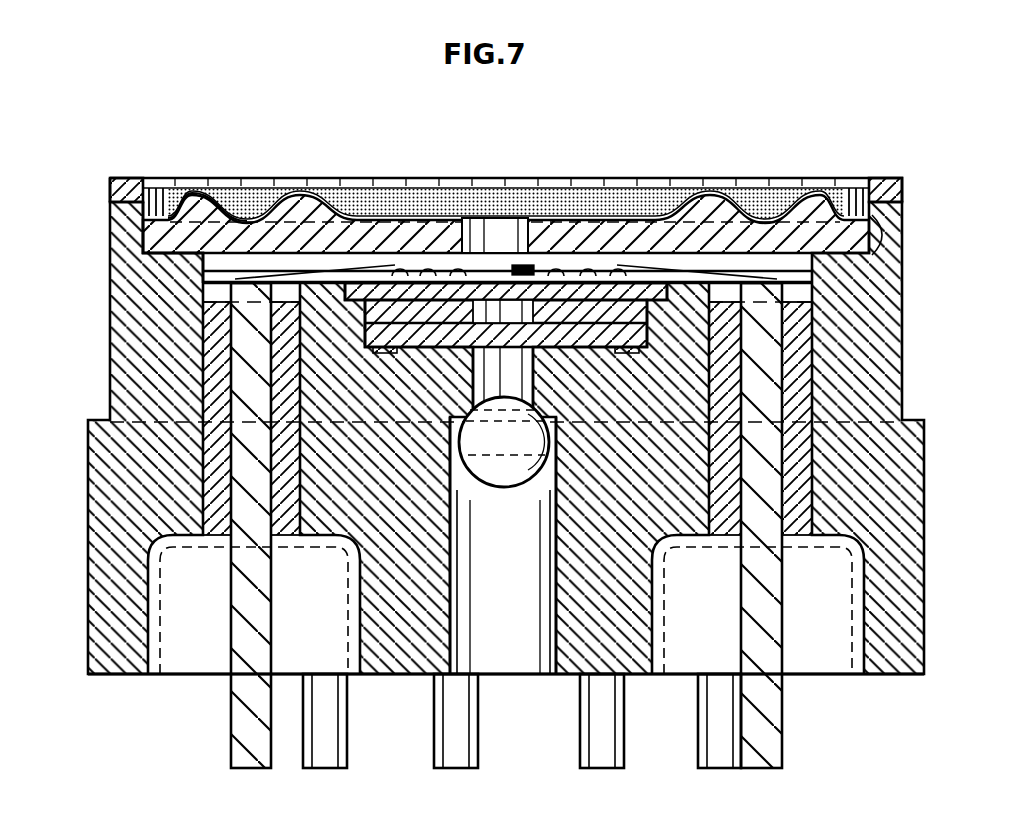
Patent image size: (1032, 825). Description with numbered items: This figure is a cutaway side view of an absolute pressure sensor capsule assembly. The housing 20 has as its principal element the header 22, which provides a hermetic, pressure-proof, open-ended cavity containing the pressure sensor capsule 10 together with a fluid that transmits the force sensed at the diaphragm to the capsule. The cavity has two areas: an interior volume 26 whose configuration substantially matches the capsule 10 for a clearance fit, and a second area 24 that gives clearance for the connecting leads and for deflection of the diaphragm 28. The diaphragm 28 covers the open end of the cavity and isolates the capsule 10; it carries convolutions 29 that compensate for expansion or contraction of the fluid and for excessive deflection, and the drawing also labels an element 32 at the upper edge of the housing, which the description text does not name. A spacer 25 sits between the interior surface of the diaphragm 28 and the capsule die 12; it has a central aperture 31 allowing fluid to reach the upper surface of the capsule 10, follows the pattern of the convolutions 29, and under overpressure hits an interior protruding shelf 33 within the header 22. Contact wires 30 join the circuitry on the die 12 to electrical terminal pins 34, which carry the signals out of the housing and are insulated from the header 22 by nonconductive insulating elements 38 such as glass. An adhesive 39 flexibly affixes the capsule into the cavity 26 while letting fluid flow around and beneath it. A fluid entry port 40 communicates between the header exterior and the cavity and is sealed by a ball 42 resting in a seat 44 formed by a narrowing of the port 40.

The pressure sensor capsule 10 is at (523, 265).
The capsule die 12 is at (657, 294).
The housing 20 is at (792, 140).
The header 22 is at (870, 210).
The second area of the cavity 24 is at (880, 247).
The spacer 25 is at (838, 262).
The interior volume of the cavity 26 is at (649, 340).
The diaphragm 28 is at (153, 188).
The convolutions 29 is at (200, 194).
The contact wires 30 is at (403, 266).
The central aperture 31 is at (503, 232).
The cap 32 is at (110, 190).
The interior protruding shelf 33 is at (178, 262).
The electrical terminal pins 34 is at (237, 453).
The insulating elements 38 is at (218, 492).
The adhesive 39 is at (620, 355).
The fluid entry port 40 is at (515, 630).
The ball 42 is at (566, 458).
The seat 44 is at (470, 414).